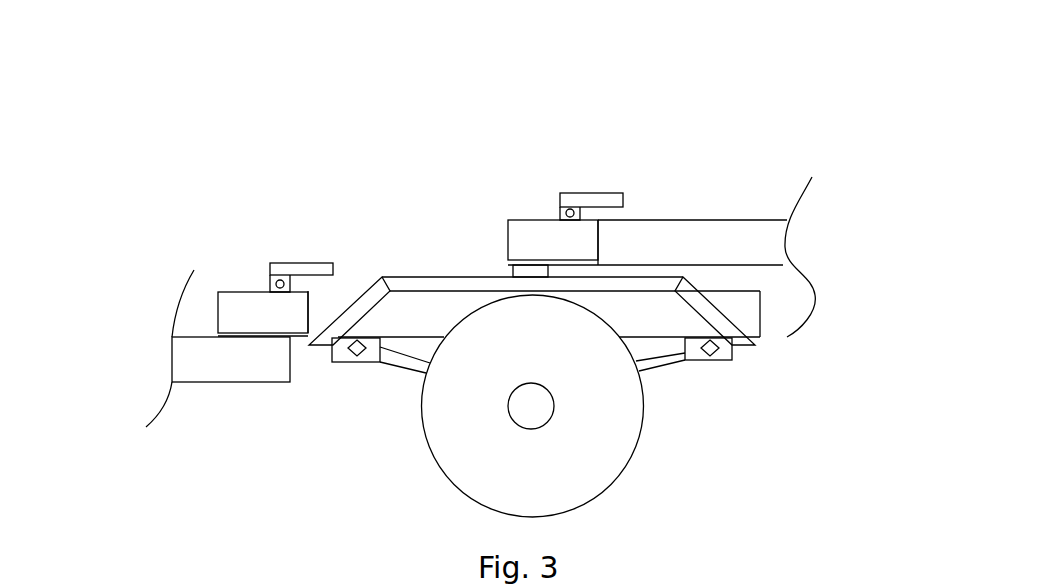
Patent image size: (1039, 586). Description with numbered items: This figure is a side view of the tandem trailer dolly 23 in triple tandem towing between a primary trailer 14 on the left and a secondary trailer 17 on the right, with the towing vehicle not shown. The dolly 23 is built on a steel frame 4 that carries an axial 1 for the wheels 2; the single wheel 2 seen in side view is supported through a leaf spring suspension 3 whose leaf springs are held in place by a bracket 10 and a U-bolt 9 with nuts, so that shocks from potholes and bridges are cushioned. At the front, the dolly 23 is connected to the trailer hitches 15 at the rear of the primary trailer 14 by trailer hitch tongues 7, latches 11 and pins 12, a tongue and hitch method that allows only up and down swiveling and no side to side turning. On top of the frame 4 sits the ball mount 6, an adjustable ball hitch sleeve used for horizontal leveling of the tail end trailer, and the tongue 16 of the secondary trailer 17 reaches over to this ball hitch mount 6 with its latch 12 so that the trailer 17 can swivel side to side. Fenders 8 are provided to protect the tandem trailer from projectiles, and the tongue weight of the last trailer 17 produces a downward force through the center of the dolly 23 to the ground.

The axial 1 is at (603, 455).
The wheels 2 is at (615, 406).
The leaf spring suspension 3 is at (599, 391).
The frame 4 is at (346, 291).
The ball mount 6 is at (571, 245).
The trailer hitch tongue 7 is at (219, 289).
The fenders 8 is at (494, 367).
The U-bolt 9 is at (537, 410).
The bracket 10 is at (597, 425).
The latches 11 is at (446, 151).
The pins 12 is at (460, 195).
The trailer 14 is at (106, 296).
The trailer hitches 15 is at (180, 414).
The tongue 16 is at (712, 170).
The trailer 17 is at (863, 257).
The tandem trailer dolly 23 is at (595, 46).